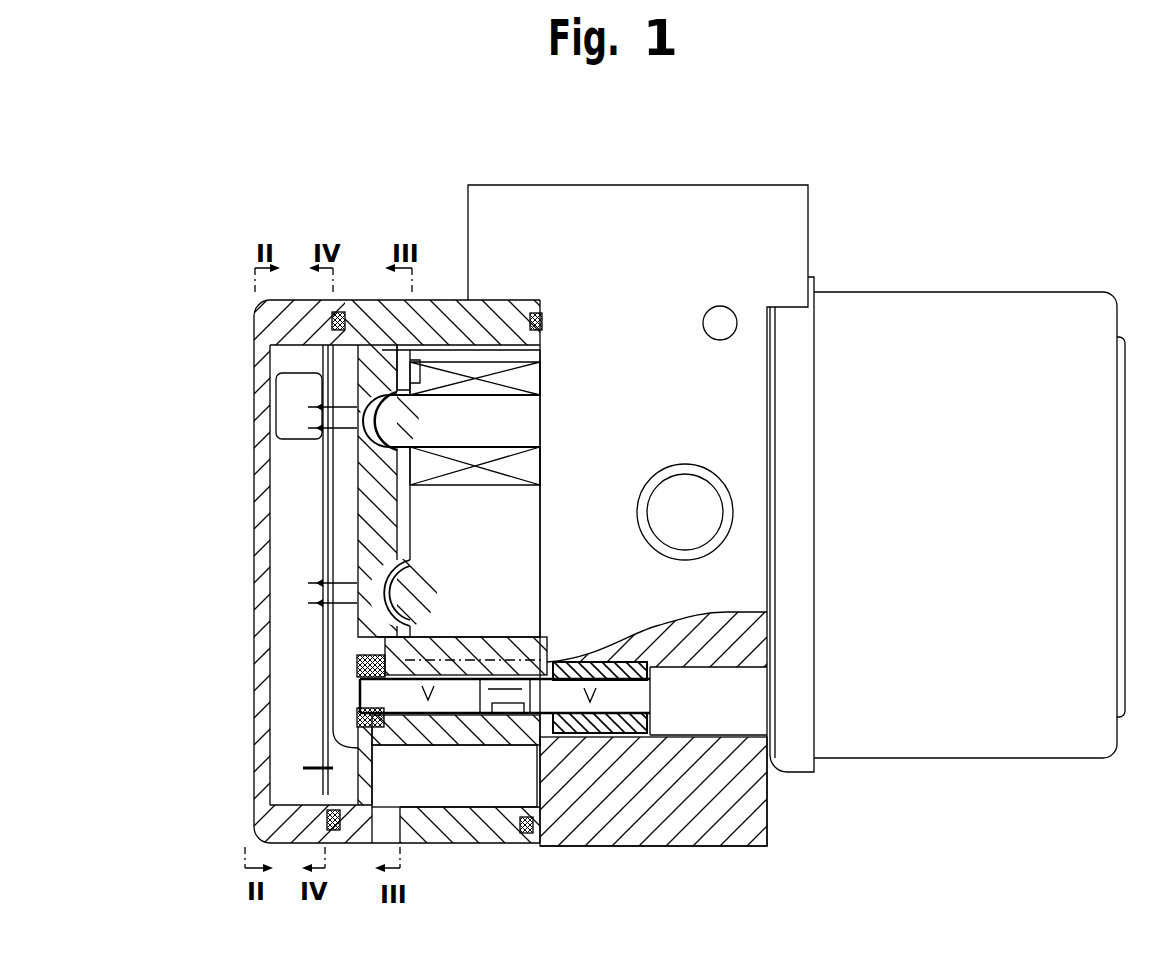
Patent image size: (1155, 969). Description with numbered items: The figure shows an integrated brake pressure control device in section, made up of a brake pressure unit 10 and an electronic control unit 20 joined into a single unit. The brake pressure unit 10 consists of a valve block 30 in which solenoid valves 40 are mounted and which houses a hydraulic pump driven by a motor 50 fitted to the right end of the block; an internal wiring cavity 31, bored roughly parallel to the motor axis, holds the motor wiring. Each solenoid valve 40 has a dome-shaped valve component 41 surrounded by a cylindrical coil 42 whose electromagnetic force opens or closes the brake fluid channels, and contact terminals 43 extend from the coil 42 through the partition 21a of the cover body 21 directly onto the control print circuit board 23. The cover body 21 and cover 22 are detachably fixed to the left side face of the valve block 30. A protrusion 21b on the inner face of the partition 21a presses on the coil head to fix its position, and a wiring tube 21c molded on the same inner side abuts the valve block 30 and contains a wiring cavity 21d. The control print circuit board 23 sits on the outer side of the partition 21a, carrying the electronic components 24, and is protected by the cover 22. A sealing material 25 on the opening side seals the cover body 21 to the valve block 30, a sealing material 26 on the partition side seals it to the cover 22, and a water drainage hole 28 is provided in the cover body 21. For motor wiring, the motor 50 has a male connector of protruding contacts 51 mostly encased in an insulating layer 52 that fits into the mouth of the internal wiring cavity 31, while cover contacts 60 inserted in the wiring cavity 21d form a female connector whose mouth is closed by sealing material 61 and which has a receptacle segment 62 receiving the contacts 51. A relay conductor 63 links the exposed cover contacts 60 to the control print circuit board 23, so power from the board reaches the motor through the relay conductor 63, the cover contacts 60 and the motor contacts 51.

The brake pressure unit 10 is at (686, 514).
The electronic control unit 20 is at (407, 532).
The cover body 21 is at (375, 532).
The partition 21a is at (390, 523).
The protrusion 21b is at (392, 363).
The wiring tube 21c is at (497, 745).
The wiring cavity 21d is at (438, 713).
The cover 22 is at (257, 520).
The control print circuit board 23 is at (320, 730).
The electronic components 24 is at (278, 403).
The sealing material 25 is at (528, 838).
The sealing material 26 is at (345, 840).
The water drainage hole 28 is at (385, 815).
The valve block 30 is at (765, 828).
The internal wiring cavity 31 is at (628, 737).
The solenoid valve 40 is at (509, 493).
The valve component 41 is at (540, 413).
The coil 42 is at (508, 468).
The contact terminals 43 is at (350, 410).
The motor 50 is at (1072, 294).
The protruding contacts 51 is at (573, 693).
The insulating layer 52 is at (707, 675).
The cover contacts 60 is at (360, 695).
The sealing material 61 is at (360, 665).
The receptacle segment 62 is at (500, 689).
The relay conductor 63 is at (327, 748).